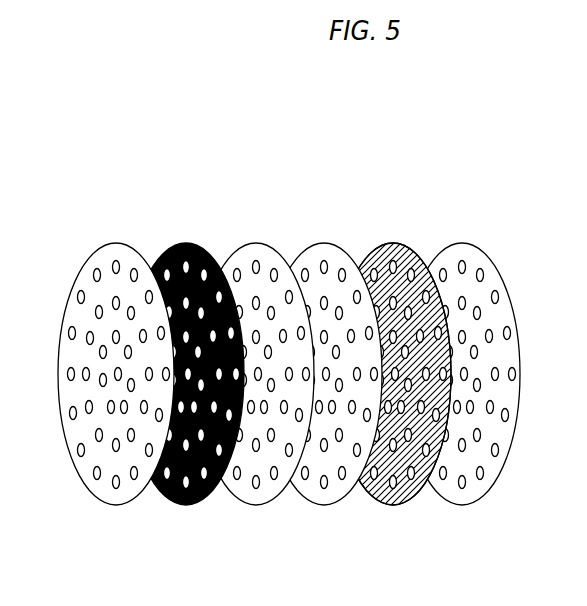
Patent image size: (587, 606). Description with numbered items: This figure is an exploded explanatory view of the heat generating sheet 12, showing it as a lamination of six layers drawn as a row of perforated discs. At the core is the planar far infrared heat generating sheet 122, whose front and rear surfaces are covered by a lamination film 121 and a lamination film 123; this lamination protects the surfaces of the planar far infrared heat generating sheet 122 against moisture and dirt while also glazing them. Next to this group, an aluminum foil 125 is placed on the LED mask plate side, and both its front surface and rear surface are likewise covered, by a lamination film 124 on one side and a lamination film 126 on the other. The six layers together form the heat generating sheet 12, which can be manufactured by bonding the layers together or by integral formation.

The heat generating sheet 12 is at (289, 371).
The lamination film 121 is at (116, 243).
The planar far infrared heat generating sheet 122 is at (188, 243).
The lamination film 123 is at (257, 243).
The lamination film 124 is at (326, 243).
The aluminum foil 125 is at (395, 243).
The lamination film 126 is at (464, 243).